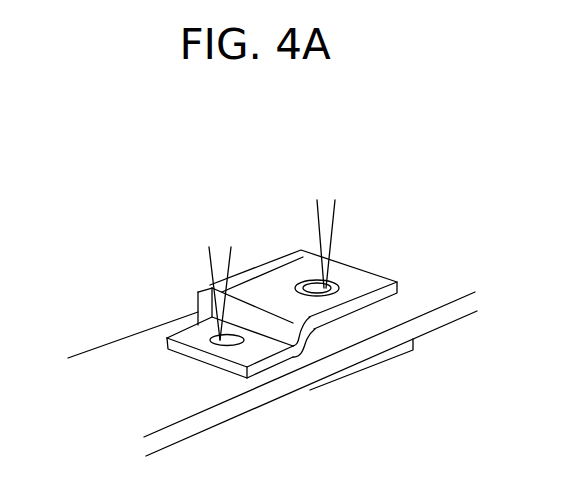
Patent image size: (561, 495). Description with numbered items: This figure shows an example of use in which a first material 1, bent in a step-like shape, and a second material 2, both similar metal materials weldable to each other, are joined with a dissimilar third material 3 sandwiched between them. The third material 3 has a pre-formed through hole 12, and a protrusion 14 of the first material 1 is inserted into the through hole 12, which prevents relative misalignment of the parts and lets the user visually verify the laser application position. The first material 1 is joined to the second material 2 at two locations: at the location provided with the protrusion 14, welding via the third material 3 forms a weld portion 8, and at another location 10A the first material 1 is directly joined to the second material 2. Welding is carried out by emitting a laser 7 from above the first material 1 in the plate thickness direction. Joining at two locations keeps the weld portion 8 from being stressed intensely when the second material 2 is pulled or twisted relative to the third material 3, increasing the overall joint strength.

The first material 1 is at (270, 287).
The second material 2 is at (105, 360).
The third material 3 is at (428, 295).
The laser 7 is at (209, 258).
The weld portion 8 is at (312, 283).
The another location 10A is at (214, 336).
The through hole 12 is at (358, 357).
The protrusion 14 is at (318, 292).